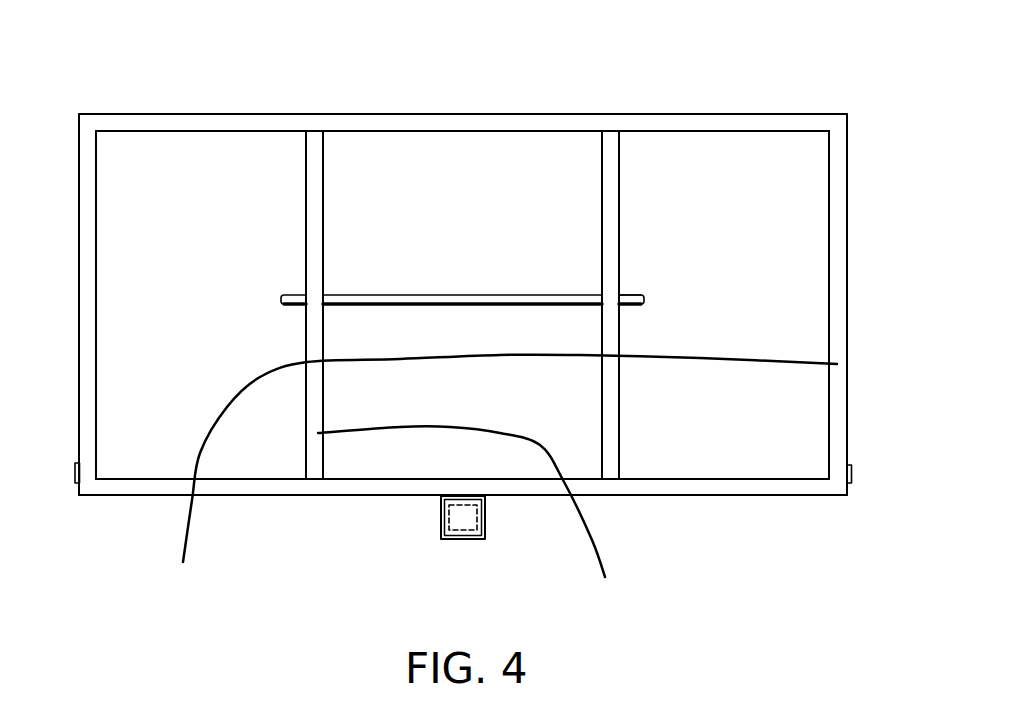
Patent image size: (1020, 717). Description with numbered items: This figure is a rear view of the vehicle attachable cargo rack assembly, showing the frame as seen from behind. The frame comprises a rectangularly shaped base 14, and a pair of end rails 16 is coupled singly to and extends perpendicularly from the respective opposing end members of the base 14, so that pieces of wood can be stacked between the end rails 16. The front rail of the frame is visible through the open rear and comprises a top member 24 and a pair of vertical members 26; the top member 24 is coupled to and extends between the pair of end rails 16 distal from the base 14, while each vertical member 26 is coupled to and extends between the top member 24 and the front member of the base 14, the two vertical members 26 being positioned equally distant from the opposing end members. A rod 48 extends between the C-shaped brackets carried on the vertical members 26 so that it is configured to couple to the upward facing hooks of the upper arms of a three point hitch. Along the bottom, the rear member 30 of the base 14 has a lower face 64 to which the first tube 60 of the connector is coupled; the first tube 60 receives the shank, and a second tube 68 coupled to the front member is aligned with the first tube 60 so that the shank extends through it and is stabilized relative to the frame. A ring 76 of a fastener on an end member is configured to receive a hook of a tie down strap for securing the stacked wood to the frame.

The base 14 is at (713, 490).
The end rails 16 is at (91, 345).
The top member 24 is at (519, 120).
The vertical members 26 is at (612, 437).
The rear member 30 is at (280, 490).
The rod 48 is at (453, 298).
The first tube 60 is at (485, 538).
The lower face 64 is at (343, 495).
The second tube 68 is at (441, 519).
The ring 76 is at (848, 482).